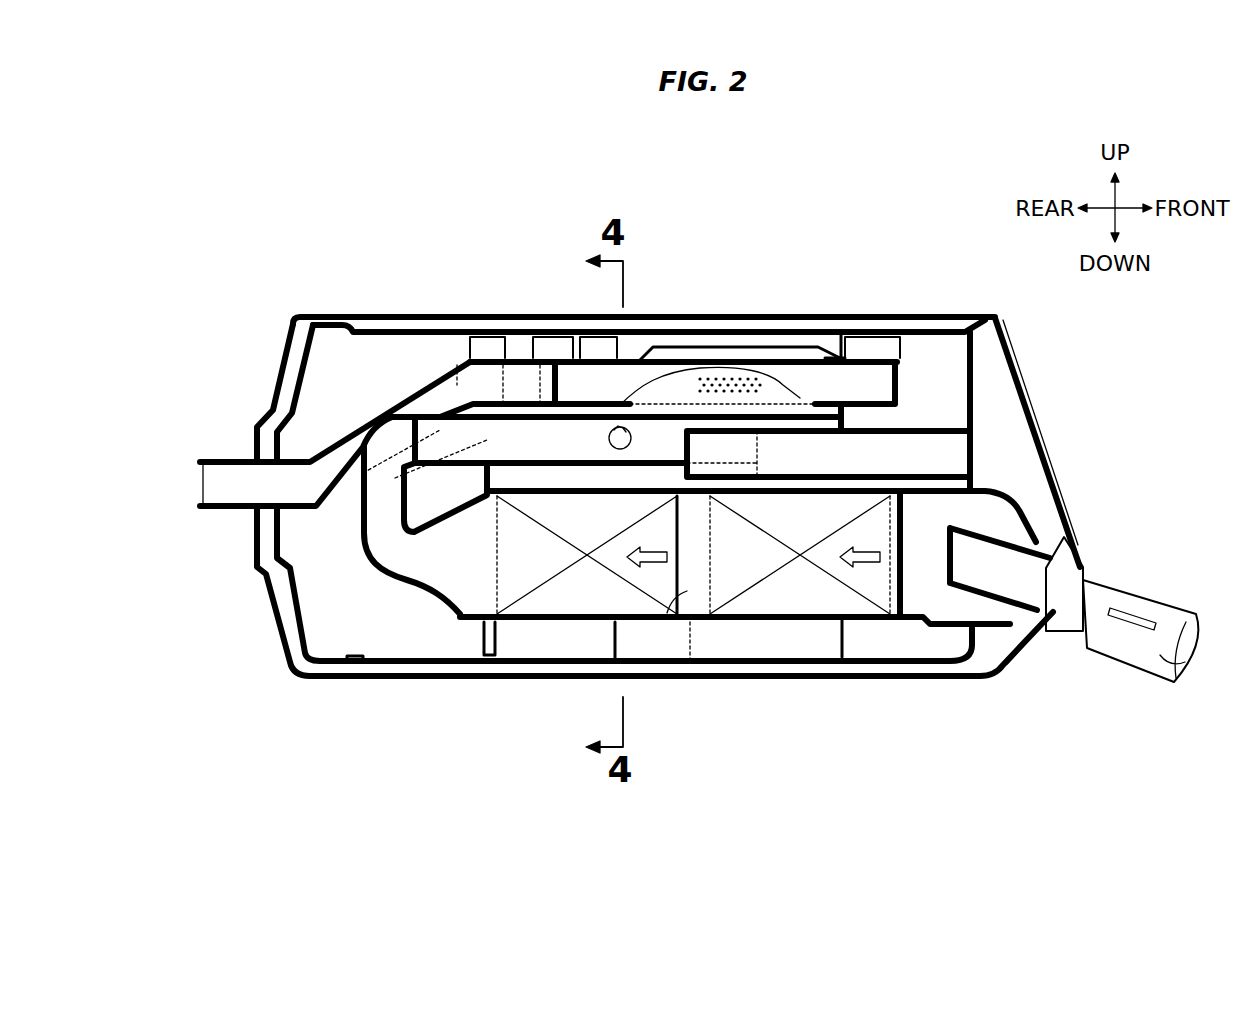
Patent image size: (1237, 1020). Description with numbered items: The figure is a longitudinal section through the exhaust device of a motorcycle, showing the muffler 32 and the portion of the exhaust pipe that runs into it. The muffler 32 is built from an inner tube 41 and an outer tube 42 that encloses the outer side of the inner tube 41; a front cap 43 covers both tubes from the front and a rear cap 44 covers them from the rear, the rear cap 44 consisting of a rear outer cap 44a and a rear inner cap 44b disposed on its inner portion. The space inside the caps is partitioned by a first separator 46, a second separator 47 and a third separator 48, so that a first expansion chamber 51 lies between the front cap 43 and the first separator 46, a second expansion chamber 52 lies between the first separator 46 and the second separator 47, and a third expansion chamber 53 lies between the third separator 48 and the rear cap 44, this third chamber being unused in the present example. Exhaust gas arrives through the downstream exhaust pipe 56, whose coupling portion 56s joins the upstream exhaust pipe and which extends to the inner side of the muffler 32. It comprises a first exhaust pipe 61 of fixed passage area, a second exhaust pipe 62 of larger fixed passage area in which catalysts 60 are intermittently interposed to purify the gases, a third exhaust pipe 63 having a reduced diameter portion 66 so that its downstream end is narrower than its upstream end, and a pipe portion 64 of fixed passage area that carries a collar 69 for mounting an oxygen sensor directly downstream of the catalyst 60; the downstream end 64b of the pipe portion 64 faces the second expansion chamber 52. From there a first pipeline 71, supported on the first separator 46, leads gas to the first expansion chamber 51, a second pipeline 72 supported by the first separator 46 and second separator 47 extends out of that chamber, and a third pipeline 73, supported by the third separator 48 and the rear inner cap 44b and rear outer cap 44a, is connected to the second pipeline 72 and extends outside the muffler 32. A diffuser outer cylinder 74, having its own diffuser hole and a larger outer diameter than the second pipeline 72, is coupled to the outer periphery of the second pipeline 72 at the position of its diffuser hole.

The muffler 32 is at (958, 317).
The inner tube 41 is at (728, 345).
The outer tube 42 is at (770, 342).
The front cap 43 is at (1037, 413).
The rear cap 44 is at (321, 413).
The rear outer cap 44a is at (292, 354).
The rear inner cap 44b is at (277, 410).
The first separator 46 is at (838, 345).
The second separator 47 is at (633, 350).
The third separator 48 is at (508, 337).
The first expansion chamber 51 is at (920, 348).
The second expansion chamber 52 is at (802, 350).
The third expansion chamber 53 is at (383, 365).
The downstream exhaust pipe 56 is at (1070, 632).
The coupling portion 56s is at (1130, 655).
The catalyst 60 is at (490, 590).
The first exhaust pipe 61 is at (965, 592).
The second exhaust pipe 62 is at (795, 624).
The third exhaust pipe 63 is at (378, 565).
The pipe portion 64 is at (527, 395).
The downstream end 64b is at (828, 406).
The reduced diameter portion 66 is at (447, 590).
The collar 69 is at (608, 442).
The first pipeline 71 is at (907, 425).
The second pipeline 72 is at (580, 380).
The third pipeline 73 is at (432, 385).
The diffuser outer cylinder 74 is at (683, 348).